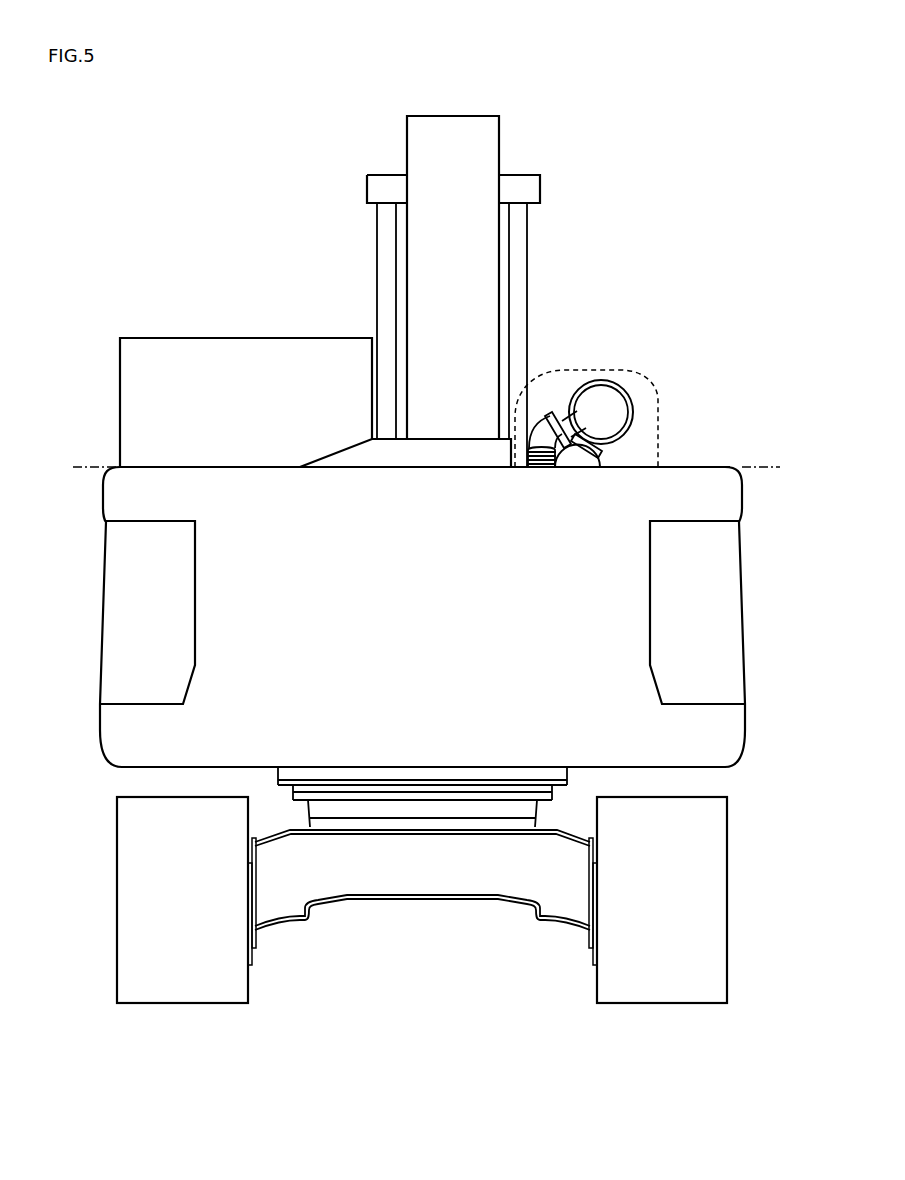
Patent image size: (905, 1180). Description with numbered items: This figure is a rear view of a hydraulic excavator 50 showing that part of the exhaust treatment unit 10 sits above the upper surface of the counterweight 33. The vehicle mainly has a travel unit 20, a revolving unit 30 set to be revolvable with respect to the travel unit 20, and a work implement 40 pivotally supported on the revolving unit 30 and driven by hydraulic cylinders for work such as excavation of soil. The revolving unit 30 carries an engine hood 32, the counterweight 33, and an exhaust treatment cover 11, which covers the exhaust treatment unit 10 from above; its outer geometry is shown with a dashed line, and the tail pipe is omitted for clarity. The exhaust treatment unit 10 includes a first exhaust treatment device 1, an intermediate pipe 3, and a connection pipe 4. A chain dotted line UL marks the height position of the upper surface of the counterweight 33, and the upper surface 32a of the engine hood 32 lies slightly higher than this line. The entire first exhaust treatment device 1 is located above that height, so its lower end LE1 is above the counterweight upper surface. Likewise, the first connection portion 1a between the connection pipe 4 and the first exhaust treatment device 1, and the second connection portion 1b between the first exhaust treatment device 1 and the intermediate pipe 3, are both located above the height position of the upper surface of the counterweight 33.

The work vehicle 50 is at (686, 150).
The work implement 40 is at (472, 114).
The revolving unit 30 is at (234, 337).
The engine hood 32 is at (389, 438).
The upper surface of engine hood 32a is at (688, 465).
The counterweight 33 is at (580, 505).
The travel unit 20 is at (729, 885).
The exhaust treatment unit 10 is at (643, 375).
The exhaust treatment cover 11 is at (618, 371).
The connection pipe 4 is at (545, 443).
The first connection portion 1a is at (553, 428).
The first exhaust treatment device 1 is at (592, 398).
The lower end of first exhaust treatment device LE1 is at (609, 440).
The second connection portion 1b is at (602, 453).
The intermediate pipe 3 is at (580, 468).
The chain dotted line UL- UL is at (427, 468).